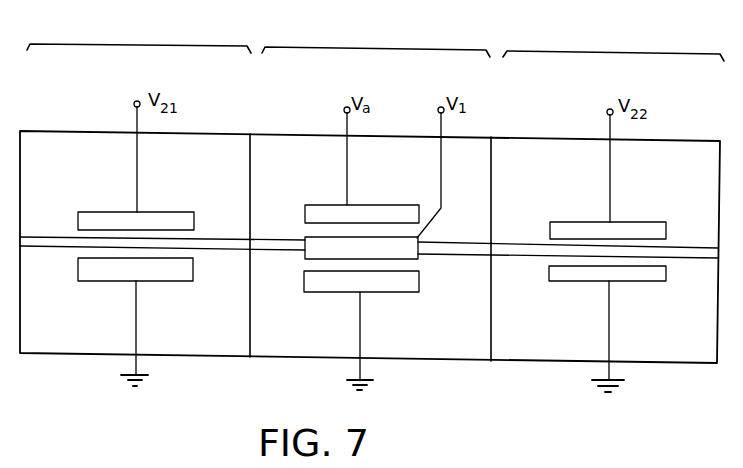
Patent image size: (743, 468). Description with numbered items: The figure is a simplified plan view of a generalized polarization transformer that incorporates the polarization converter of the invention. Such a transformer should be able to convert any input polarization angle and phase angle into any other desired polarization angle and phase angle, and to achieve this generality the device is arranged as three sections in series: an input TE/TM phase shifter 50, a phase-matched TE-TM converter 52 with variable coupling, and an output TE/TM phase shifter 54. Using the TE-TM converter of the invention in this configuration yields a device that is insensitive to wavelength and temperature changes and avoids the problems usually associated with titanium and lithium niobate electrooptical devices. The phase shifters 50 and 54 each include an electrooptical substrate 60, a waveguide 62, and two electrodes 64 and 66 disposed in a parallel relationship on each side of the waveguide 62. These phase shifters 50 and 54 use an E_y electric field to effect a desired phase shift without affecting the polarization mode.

The input TE/TM phase shifter 50 is at (137, 46).
The phase-matched TE-TM converter with variable coupling 52 is at (352, 50).
The output TE/TM phase shifter 54 is at (575, 53).
The electrooptical substrate 60 is at (194, 336).
The waveguide 62 is at (208, 243).
The electrode 64 is at (154, 212).
The electrode 66 is at (100, 282).